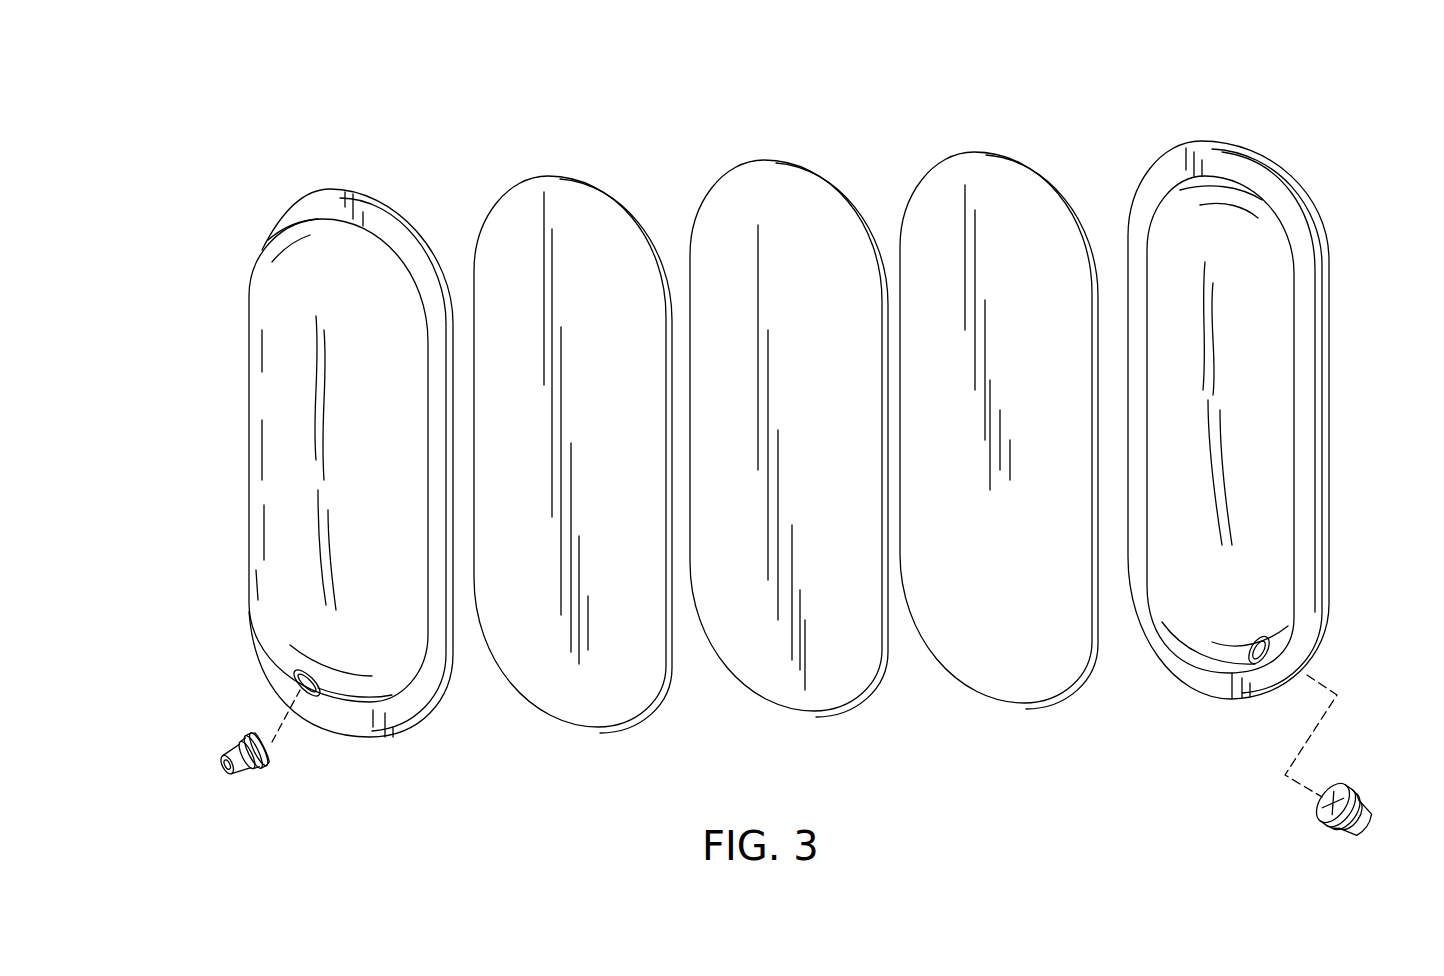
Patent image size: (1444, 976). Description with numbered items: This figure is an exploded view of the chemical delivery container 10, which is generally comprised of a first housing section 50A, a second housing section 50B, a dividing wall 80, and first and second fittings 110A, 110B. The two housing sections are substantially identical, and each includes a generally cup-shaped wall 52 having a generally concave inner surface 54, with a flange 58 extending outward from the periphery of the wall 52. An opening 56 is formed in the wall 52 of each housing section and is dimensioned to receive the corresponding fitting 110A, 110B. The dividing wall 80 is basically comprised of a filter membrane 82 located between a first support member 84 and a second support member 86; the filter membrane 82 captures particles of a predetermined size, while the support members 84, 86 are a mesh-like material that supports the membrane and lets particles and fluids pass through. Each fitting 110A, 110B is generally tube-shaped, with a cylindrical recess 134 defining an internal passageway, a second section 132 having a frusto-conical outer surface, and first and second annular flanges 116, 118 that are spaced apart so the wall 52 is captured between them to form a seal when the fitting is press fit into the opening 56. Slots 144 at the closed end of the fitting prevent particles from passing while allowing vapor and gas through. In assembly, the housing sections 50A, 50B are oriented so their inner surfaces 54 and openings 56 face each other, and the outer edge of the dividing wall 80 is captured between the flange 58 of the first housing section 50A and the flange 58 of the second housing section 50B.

The chemical delivery container 10 is at (1312, 116).
The first housing section 50A is at (243, 494).
The second housing section 50B is at (1330, 249).
The wall 52 is at (262, 386).
The inner surface 54 is at (1273, 350).
The opening 56 is at (298, 683).
The flange 58 is at (415, 712).
The dividing wall 80 is at (1012, 135).
The filter membrane 82 is at (780, 690).
The first support member 84 is at (597, 705).
The second support member 86 is at (1005, 682).
The first fitting 110A is at (246, 777).
The second fitting 110B is at (1350, 840).
The first annular flange 116 is at (274, 750).
The second annular flange 118 is at (263, 765).
The second section 132 is at (230, 757).
The cylindrical recess 134 is at (225, 772).
The slots 144 is at (1318, 810).